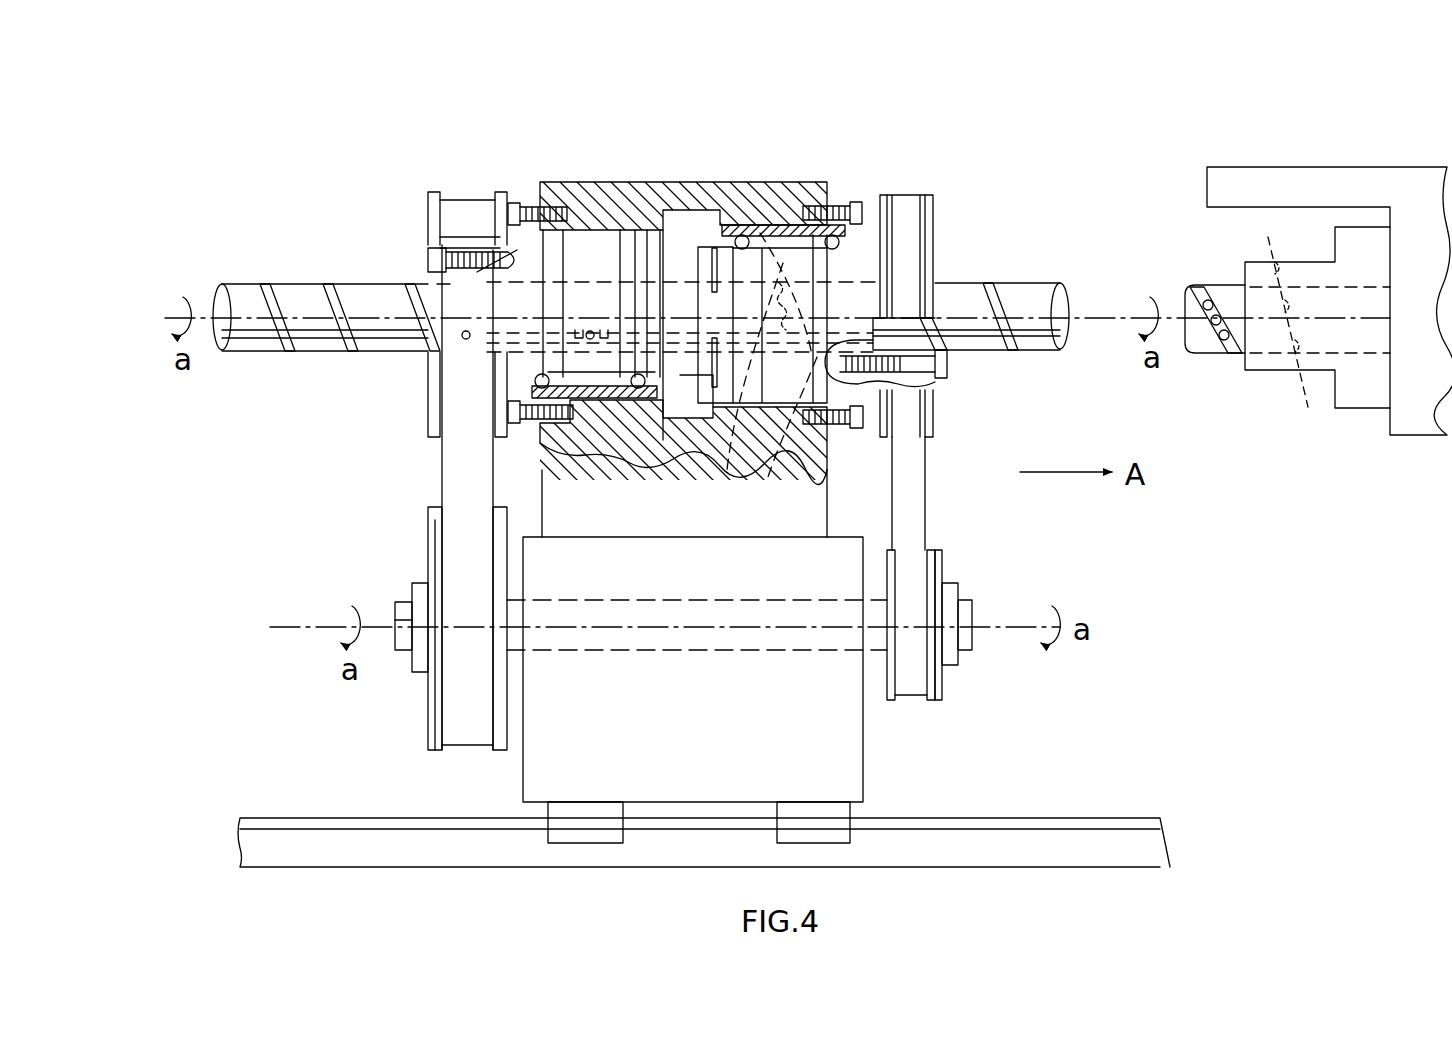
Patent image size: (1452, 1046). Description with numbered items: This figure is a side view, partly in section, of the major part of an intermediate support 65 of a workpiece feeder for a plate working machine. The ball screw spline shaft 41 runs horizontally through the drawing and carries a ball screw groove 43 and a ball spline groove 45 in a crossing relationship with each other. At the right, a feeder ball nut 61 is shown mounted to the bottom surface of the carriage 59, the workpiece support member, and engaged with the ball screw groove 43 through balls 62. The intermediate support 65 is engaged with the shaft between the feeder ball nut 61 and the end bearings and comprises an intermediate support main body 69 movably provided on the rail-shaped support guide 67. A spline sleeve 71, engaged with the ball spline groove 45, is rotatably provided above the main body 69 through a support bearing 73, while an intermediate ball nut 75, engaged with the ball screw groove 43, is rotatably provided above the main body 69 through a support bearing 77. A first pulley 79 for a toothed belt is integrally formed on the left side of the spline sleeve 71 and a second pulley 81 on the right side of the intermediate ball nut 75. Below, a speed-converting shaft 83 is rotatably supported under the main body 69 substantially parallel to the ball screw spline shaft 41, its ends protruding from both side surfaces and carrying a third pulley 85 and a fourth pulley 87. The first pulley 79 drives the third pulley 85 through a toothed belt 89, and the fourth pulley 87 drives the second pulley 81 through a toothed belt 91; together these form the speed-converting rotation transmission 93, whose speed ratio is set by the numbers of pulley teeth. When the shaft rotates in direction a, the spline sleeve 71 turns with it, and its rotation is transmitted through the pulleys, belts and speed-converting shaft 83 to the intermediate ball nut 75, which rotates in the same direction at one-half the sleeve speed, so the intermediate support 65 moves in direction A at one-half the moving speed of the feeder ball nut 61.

The ball screw spline shaft 41 is at (598, 280).
The ball screw groove 43 is at (328, 280).
The ball spline groove 45 is at (392, 347).
The carriage 59 is at (1287, 167).
The feeder ball nut 61 is at (1284, 362).
The balls 62 is at (468, 340).
The intermediate support 65 is at (905, 135).
The support guide 67 is at (1054, 818).
The intermediate support main body 69 is at (853, 753).
The spline sleeve 71 is at (568, 263).
The support bearing 73 is at (605, 440).
The intermediate ball nut 75 is at (722, 260).
The support bearing 77 is at (807, 210).
The first pulley 79 is at (425, 237).
The second pulley 81 is at (940, 237).
The speed-converting shaft 83 is at (975, 617).
The third pulley 85 is at (420, 545).
The fourth pulley 87 is at (945, 567).
The toothed belt 89 is at (443, 477).
The toothed belt 91 is at (938, 482).
The speed-converting rotation transmission 93 is at (297, 547).